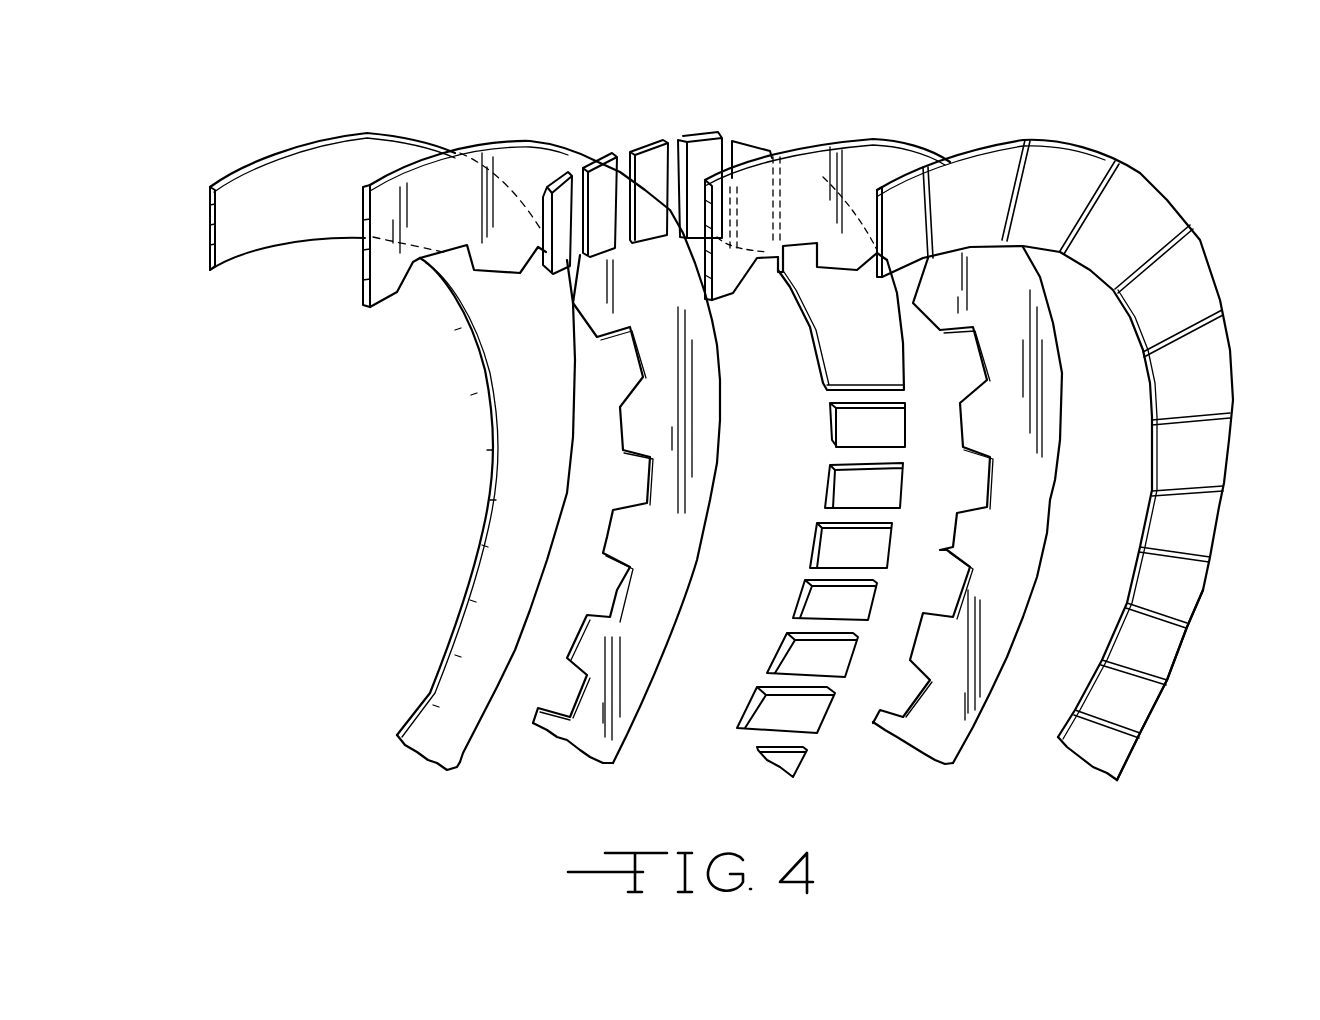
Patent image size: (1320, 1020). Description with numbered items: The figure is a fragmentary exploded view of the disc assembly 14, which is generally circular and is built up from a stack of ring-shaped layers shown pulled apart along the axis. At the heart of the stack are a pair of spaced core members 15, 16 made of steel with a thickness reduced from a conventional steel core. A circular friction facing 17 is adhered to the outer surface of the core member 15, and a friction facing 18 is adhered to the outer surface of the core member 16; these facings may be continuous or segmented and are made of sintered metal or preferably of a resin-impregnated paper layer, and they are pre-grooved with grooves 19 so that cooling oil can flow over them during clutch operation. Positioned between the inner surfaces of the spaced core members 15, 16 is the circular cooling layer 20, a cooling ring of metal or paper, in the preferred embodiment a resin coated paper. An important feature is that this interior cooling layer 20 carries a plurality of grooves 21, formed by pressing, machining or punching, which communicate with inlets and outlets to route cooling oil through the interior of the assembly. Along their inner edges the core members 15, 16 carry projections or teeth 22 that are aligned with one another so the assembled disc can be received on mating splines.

The disc assembly 14 is at (1220, 528).
The core member 15 is at (975, 727).
The core member 16 is at (647, 707).
The friction facing 17 is at (1187, 645).
The friction facing 18 is at (462, 618).
The grooves 19 is at (1152, 243).
The cooling layer 20 is at (810, 328).
The grooves 21 is at (679, 138).
The teeth 22 is at (617, 430).